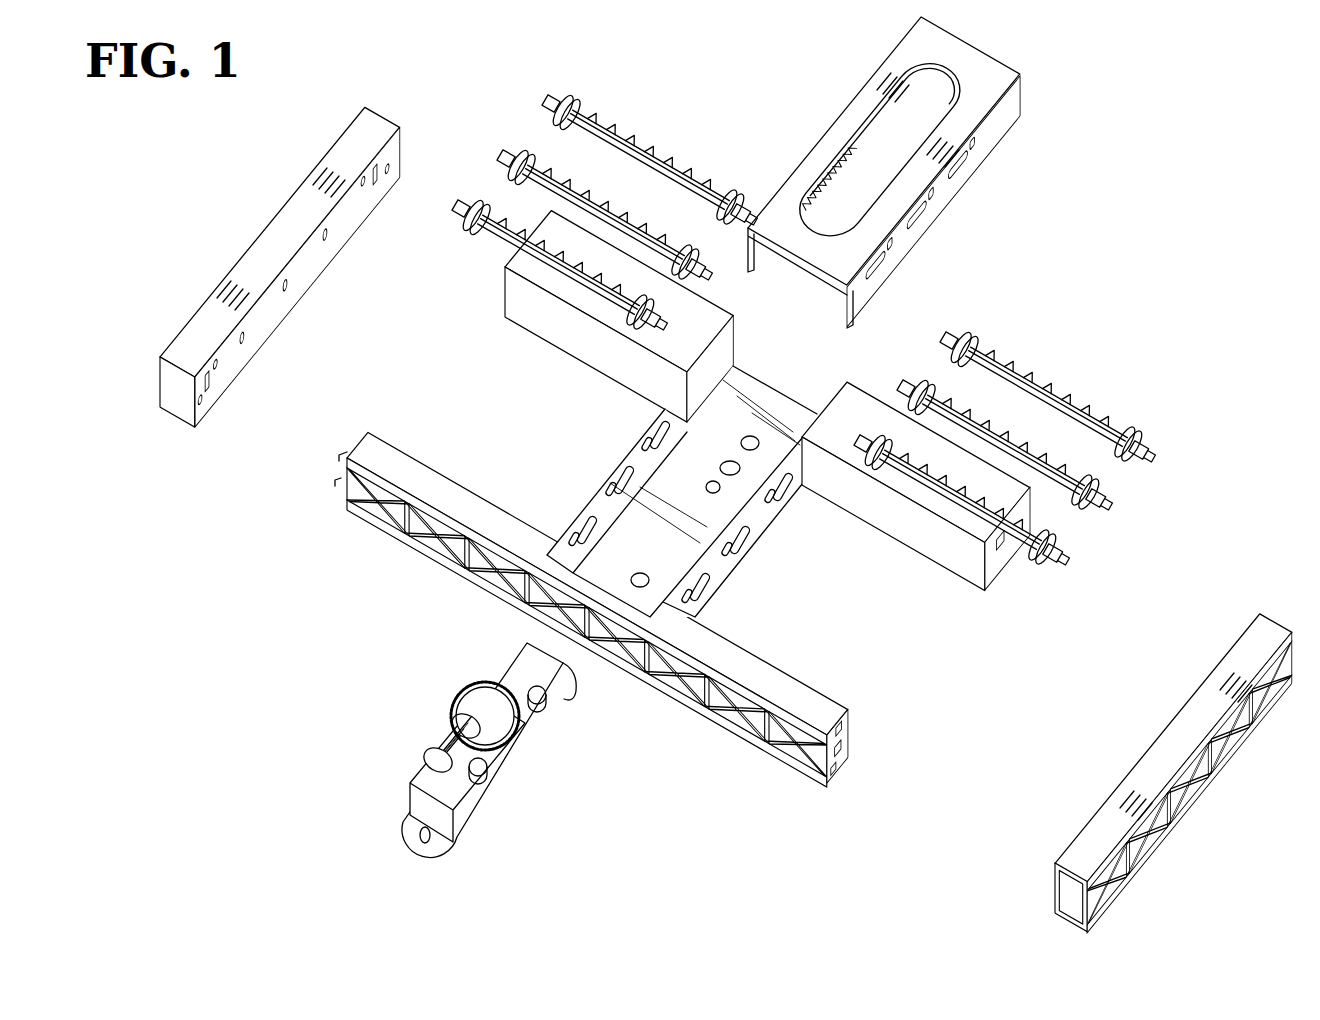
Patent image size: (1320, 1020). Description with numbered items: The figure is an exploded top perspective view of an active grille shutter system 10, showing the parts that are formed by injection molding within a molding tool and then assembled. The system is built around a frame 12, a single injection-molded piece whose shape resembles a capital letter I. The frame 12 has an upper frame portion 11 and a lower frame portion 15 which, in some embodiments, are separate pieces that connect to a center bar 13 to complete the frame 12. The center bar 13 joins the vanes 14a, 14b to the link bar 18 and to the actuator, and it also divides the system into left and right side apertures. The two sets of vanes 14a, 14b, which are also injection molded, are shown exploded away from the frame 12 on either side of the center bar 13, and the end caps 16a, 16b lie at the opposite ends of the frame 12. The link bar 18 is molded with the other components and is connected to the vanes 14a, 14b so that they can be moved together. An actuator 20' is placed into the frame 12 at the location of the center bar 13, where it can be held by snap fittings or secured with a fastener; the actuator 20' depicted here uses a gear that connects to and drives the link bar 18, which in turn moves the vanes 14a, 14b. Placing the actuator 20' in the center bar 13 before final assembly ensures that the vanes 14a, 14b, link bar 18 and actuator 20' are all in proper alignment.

The active grille shutter system 10 is at (1205, 216).
The upper frame portion 11 is at (965, 555).
The frame 12 is at (405, 626).
The center bar 13 is at (763, 522).
The vane 14a is at (1172, 437).
The vane 14b is at (565, 80).
The lower frame portion 15 is at (738, 735).
The end cap 16a is at (1178, 743).
The end cap 16b is at (276, 236).
The link bar 18 is at (994, 128).
The actuator 20' is at (451, 750).